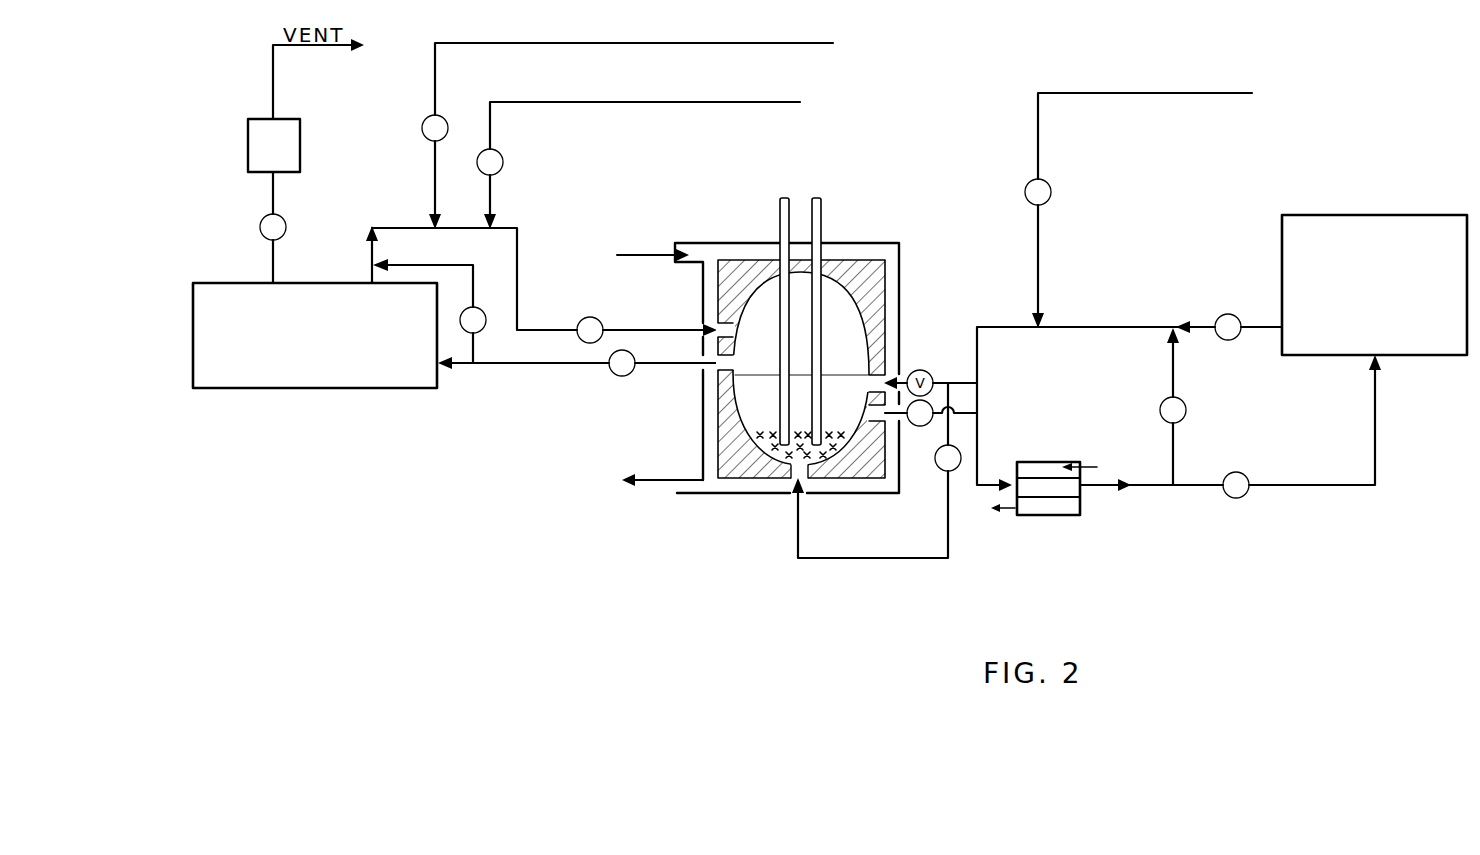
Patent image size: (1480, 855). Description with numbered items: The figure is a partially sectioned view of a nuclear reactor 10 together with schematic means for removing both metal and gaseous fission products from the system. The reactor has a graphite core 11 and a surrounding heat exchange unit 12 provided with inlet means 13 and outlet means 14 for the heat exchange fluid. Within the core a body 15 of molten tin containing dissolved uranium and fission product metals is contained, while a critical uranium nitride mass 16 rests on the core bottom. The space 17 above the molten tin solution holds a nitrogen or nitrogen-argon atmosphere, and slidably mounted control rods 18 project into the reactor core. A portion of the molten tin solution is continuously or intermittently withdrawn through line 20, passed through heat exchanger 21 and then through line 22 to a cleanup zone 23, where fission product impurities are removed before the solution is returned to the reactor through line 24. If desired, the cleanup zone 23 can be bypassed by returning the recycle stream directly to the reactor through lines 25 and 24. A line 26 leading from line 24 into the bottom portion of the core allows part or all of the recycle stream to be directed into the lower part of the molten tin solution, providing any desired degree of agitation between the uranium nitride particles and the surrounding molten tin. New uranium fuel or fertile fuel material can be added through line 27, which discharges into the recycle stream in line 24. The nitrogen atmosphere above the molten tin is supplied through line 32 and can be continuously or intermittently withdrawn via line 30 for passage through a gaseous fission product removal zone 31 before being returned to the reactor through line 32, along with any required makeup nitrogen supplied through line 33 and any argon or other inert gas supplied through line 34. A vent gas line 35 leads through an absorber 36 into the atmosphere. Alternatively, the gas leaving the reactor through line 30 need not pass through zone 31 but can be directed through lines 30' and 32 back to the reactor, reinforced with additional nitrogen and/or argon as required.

The nuclear reactor 10 is at (912, 292).
The graphite core 11 is at (851, 268).
The heat exchange unit 12 is at (749, 255).
The inlet means 13 is at (641, 257).
The outlet means 14 is at (652, 485).
The body of molten tin 15 is at (750, 393).
The critical uranium nitride mass 16 is at (767, 440).
The space above the molten tin solution 17 is at (757, 362).
The control rods 18 is at (816, 198).
The line 20 is at (980, 412).
The heat exchanger 21 is at (1050, 517).
The line 22 is at (1157, 487).
The cleanup zone 23 is at (1332, 356).
The line 24 is at (1089, 330).
The line 25 is at (1173, 438).
The line 26 is at (948, 530).
The line 27 is at (1038, 238).
The line 30 is at (578, 371).
The line 30' is at (443, 311).
The gaseous fission product removal zone 31 is at (323, 389).
The line 32 is at (421, 227).
The line 33 is at (435, 80).
The line 34 is at (490, 140).
The vent gas line 35 is at (273, 197).
The absorber 36 is at (248, 152).